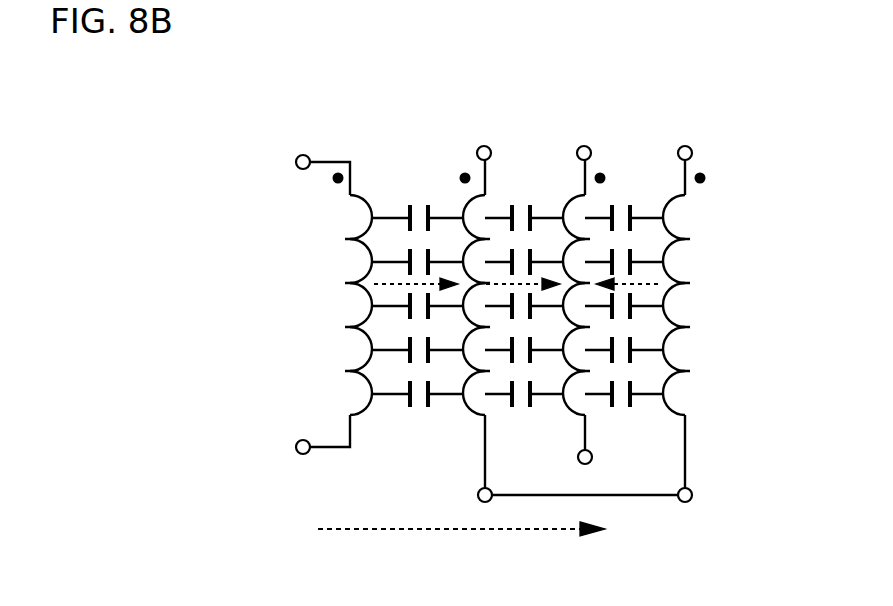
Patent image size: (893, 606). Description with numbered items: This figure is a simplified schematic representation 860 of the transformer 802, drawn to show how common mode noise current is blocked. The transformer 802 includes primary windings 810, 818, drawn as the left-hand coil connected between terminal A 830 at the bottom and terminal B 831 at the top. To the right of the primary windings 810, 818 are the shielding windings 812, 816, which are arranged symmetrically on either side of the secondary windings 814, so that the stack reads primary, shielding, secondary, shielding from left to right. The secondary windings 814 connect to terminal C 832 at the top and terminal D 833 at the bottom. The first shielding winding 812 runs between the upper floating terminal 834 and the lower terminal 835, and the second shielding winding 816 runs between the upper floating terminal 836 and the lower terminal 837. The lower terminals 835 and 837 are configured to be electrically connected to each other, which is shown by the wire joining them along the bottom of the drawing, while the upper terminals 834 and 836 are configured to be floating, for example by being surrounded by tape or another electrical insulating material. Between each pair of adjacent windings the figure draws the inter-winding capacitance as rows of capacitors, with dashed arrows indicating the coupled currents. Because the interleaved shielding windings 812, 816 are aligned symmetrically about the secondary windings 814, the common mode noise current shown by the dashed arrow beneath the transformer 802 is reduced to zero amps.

The simplified schematic representation 860 is at (101, 99).
The transformer 802 is at (383, 136).
The primary winding 810 is at (350, 371).
The primary winding 818 is at (292, 305).
The shielding winding 812 is at (470, 197).
The secondary windings 814 is at (570, 197).
The shielding winding 816 is at (672, 197).
The terminal B 831 is at (301, 171).
The terminal S1 834 is at (483, 146).
The terminal C 832 is at (583, 146).
The terminal S2 836 is at (685, 146).
The terminal A 830 is at (304, 440).
The terminal S'1 835 is at (478, 492).
The terminal D 833 is at (592, 456).
The terminal S'2 837 is at (693, 492).